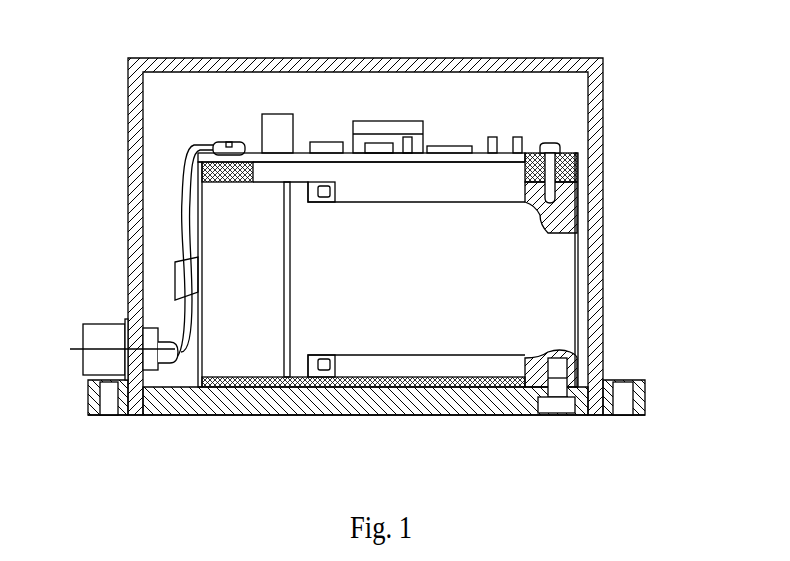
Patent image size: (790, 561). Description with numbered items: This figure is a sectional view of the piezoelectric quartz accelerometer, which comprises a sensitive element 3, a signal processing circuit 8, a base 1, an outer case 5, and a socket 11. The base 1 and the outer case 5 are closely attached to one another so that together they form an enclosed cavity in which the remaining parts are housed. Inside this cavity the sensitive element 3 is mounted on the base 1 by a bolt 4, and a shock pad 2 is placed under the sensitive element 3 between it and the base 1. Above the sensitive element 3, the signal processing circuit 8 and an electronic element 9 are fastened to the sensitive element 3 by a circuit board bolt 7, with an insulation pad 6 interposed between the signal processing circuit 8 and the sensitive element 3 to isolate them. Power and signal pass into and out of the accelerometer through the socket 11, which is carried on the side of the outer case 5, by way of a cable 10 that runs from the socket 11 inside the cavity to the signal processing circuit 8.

The base 1 is at (197, 397).
The shock pad 2 is at (304, 380).
The sensitive element 3 is at (388, 327).
The bolt 4 is at (552, 402).
The outer case 5 is at (595, 295).
The insulation pad 6 is at (575, 173).
The circuit board bolt 7 is at (546, 149).
The signal processing circuit 8 is at (476, 157).
The electronic element 9 is at (280, 130).
The cable 10 is at (198, 146).
The socket 11 is at (107, 337).